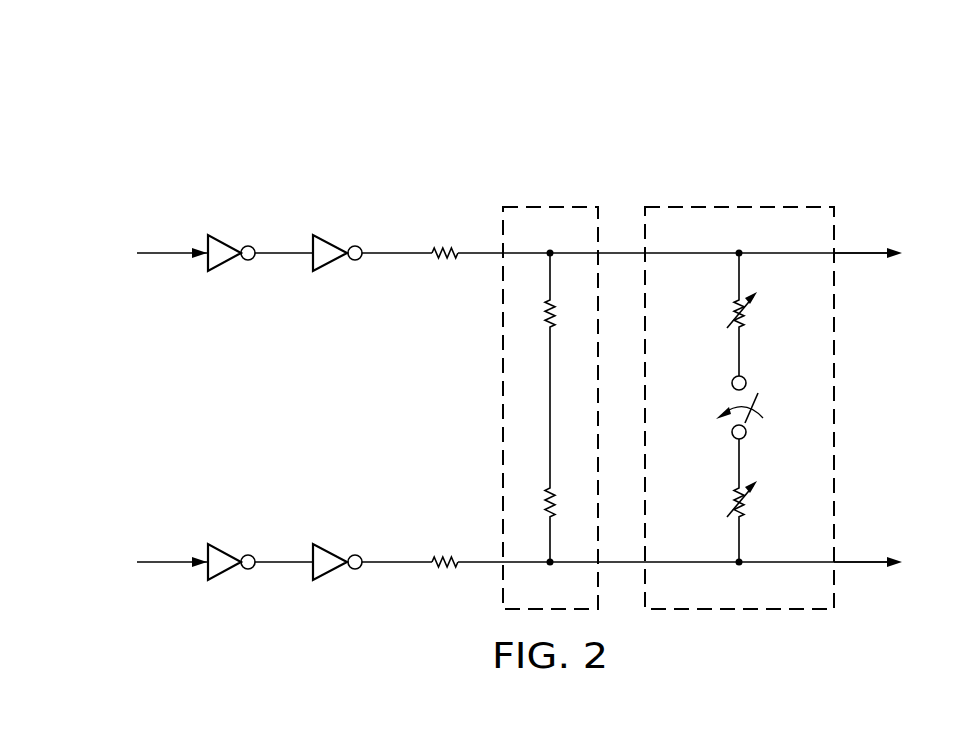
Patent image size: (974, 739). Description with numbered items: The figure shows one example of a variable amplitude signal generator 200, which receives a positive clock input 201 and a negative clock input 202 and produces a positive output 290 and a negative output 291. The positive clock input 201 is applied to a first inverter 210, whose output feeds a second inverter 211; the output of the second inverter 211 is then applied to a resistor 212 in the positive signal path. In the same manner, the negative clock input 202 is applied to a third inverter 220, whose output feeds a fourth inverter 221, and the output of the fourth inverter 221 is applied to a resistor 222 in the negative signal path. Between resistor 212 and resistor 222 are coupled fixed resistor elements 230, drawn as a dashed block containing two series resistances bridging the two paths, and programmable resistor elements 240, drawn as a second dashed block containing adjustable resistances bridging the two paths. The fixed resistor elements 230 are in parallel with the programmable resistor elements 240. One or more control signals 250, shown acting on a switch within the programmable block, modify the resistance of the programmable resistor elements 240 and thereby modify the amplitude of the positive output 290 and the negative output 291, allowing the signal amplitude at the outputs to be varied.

The variable amplitude signal generator 200 is at (351, 130).
The positive clock input 201 is at (173, 251).
The negative clock input 202 is at (173, 564).
The first inverter 210 is at (225, 243).
The second inverter 211 is at (332, 243).
The resistor 212 is at (439, 248).
The third inverter 220 is at (225, 573).
The fourth inverter 221 is at (332, 573).
The resistor 222 is at (440, 567).
The fixed resistor elements 230 is at (569, 200).
The programmable resistor elements 240 is at (739, 371).
The control signal 250 is at (748, 419).
The positive output 290 is at (868, 250).
The negative output 291 is at (870, 565).